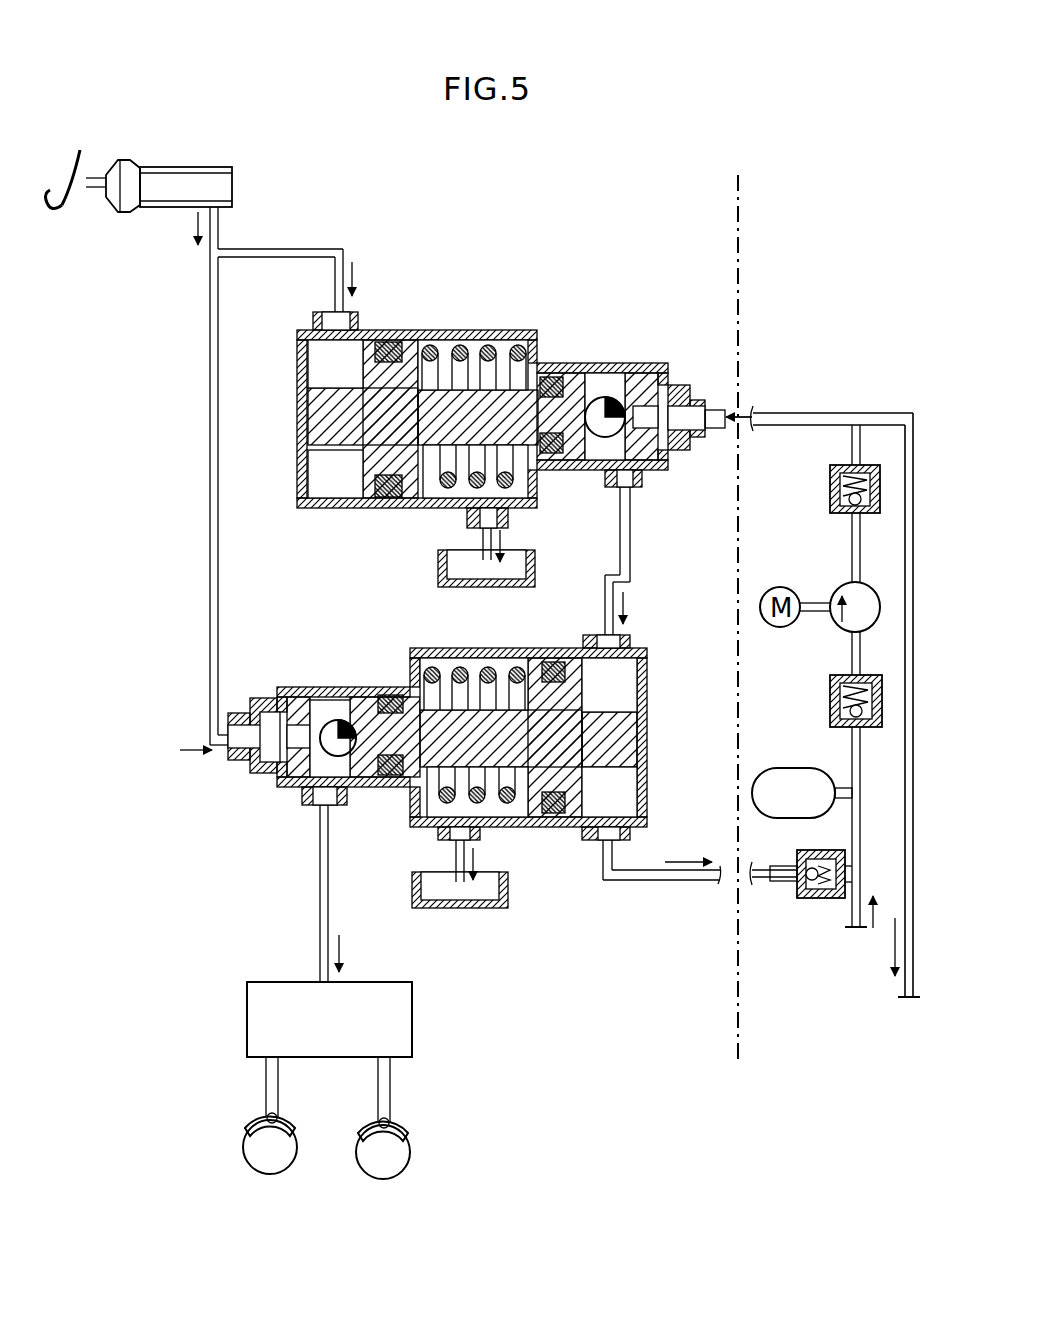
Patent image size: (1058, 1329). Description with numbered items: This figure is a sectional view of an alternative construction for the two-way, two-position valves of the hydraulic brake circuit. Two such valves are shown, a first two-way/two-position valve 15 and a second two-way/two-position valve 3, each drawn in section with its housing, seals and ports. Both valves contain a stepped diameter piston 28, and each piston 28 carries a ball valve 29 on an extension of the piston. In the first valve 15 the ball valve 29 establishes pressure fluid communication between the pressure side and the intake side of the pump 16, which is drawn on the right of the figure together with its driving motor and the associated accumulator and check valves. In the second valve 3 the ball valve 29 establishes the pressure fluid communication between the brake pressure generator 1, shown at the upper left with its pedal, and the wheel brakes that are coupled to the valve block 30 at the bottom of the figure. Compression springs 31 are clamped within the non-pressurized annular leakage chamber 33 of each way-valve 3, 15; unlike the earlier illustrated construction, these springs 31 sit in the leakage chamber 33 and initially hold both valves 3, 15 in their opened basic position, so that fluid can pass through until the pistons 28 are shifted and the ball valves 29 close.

The brake pressure generator 1 is at (222, 172).
The second 2-way/2-position valve 3 is at (354, 680).
The first 2-way/2-position valve 15 is at (567, 358).
The pump 16 is at (846, 588).
The stepped diameter piston 28 is at (373, 500).
The ball valve 29 is at (636, 466).
The valve block 30 is at (400, 1020).
The compression spring 31 is at (475, 345).
The non-pressurized annular leakage chamber 33 is at (446, 373).